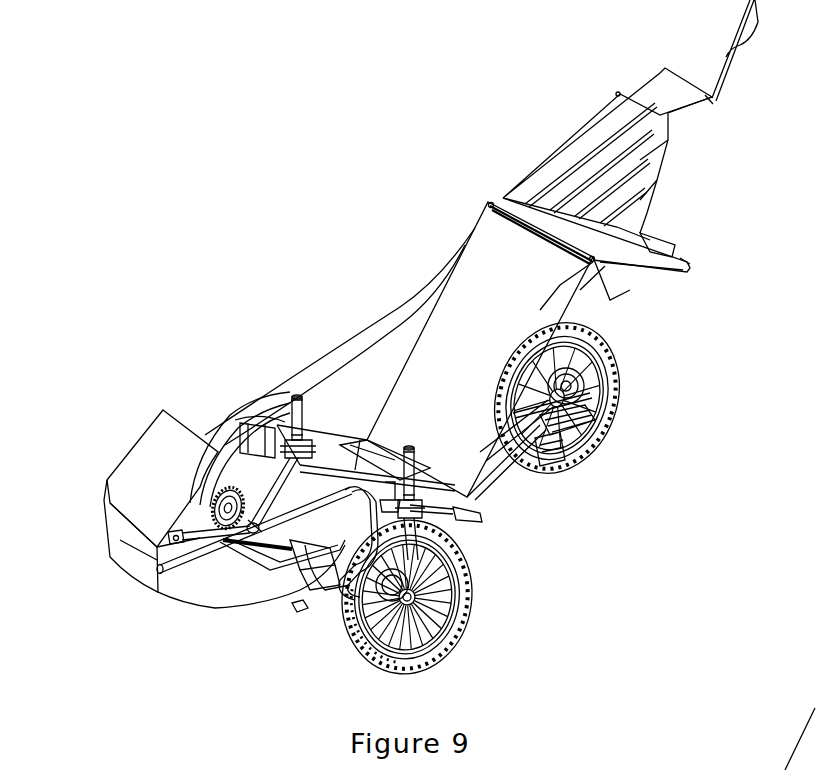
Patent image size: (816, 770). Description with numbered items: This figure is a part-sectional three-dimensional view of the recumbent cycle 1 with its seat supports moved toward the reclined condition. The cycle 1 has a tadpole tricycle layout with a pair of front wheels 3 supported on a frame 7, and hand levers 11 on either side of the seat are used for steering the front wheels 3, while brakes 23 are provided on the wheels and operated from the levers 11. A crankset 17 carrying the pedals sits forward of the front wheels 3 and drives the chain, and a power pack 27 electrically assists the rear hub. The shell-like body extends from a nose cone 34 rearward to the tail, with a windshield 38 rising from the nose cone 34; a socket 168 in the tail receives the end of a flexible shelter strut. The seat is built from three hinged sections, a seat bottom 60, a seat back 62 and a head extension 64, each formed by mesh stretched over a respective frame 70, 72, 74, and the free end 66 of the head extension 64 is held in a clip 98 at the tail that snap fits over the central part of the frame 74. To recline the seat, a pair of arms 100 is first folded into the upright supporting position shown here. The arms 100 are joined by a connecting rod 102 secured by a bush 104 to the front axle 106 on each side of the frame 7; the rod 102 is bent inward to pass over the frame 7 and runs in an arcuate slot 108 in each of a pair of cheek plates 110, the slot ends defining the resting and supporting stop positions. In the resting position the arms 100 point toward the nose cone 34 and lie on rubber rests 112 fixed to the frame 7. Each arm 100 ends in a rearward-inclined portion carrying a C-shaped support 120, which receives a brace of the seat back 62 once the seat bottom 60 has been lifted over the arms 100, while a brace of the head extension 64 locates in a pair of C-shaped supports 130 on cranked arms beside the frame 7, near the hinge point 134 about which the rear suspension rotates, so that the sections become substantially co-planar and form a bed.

The recumbent cycle 1 is at (292, 246).
The front wheels 3 is at (440, 638).
The frame 7 is at (250, 580).
The hand levers 11 is at (295, 397).
The crankset 17 is at (186, 521).
The brakes 23 is at (446, 591).
The power pack 27 is at (548, 443).
The nose cone 34 is at (128, 557).
The windshield 38 is at (165, 455).
The seat bottom 60 is at (365, 460).
The seat back 62 is at (482, 292).
The head extension 64 is at (655, 264).
The free end 66 is at (690, 262).
The frame of seat bottom 70 is at (452, 518).
The frame of seat back 72 is at (480, 482).
The frame of head extension 74 is at (633, 266).
The clip 98 is at (664, 243).
The arms 100 is at (253, 448).
The connecting rod 102 is at (305, 593).
The bush 104 is at (322, 590).
The front axle 106 is at (317, 587).
The arcuate slot 108 is at (250, 500).
The cheek plates 110 is at (300, 565).
The rubber rests 112 is at (300, 612).
The C-shaped support 120 is at (290, 457).
The C-shaped supports 130 is at (590, 378).
The hinge point 134 is at (575, 437).
The socket 168 is at (618, 94).